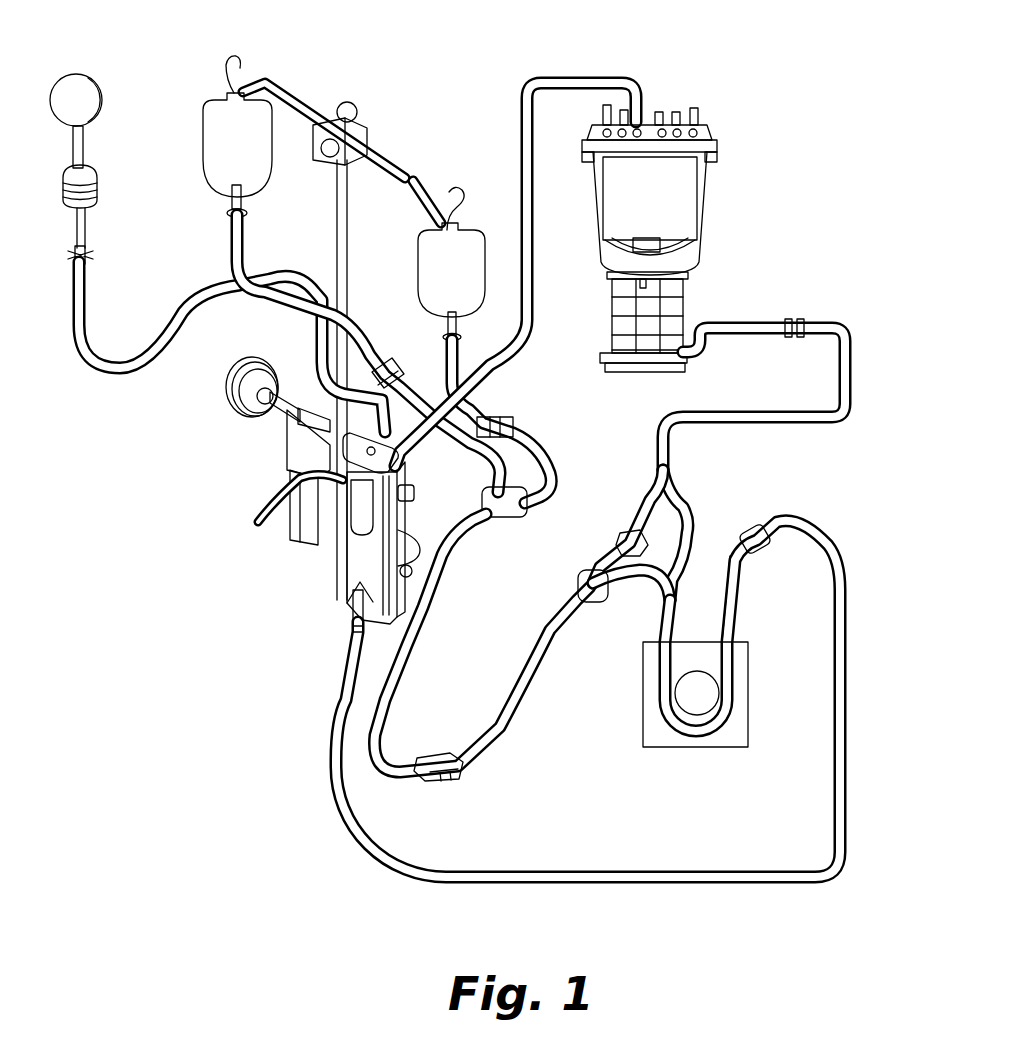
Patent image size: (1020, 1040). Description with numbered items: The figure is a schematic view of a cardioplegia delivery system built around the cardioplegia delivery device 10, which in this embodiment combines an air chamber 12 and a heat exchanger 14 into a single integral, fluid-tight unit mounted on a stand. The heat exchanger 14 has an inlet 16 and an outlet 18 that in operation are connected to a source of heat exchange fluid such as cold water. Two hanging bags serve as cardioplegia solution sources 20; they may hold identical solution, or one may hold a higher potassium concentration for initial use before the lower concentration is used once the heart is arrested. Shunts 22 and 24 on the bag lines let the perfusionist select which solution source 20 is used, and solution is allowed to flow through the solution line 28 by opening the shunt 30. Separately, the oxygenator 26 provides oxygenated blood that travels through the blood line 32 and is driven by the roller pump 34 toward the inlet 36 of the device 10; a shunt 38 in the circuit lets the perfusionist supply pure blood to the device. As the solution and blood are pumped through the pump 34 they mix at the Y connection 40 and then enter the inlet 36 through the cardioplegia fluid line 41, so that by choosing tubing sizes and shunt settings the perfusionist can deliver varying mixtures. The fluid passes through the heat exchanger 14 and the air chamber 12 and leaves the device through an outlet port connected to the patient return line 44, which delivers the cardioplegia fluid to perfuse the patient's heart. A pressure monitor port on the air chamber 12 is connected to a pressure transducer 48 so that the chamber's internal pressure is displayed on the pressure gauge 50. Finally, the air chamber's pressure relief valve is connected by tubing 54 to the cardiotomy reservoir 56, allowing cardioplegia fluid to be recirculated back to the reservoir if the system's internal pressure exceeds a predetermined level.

The cardioplegia delivery device 10 is at (335, 604).
The air chamber 12 is at (352, 508).
The heat exchanger 14 is at (350, 562).
The inlet 16 is at (412, 500).
The outlet 18 is at (412, 568).
The cardioplegia solution source 20 is at (266, 176).
The shunt 22 is at (386, 364).
The shunt 24 is at (515, 425).
The oxygenator 26 is at (692, 316).
The solution line 28 is at (414, 651).
The shunt 30 is at (440, 782).
The blood line 32 is at (850, 392).
The roller pump 34 is at (734, 750).
The inlet 36 is at (352, 632).
The shunt 38 is at (617, 543).
The Y connection 40 is at (753, 530).
The cardioplegia fluid line 41 is at (435, 880).
The patient return line 44 is at (262, 513).
The pressure transducer 48 is at (98, 188).
The pressure gauge 50 is at (100, 84).
The tubing 54 is at (622, 77).
The cardiotomy reservoir 56 is at (702, 212).